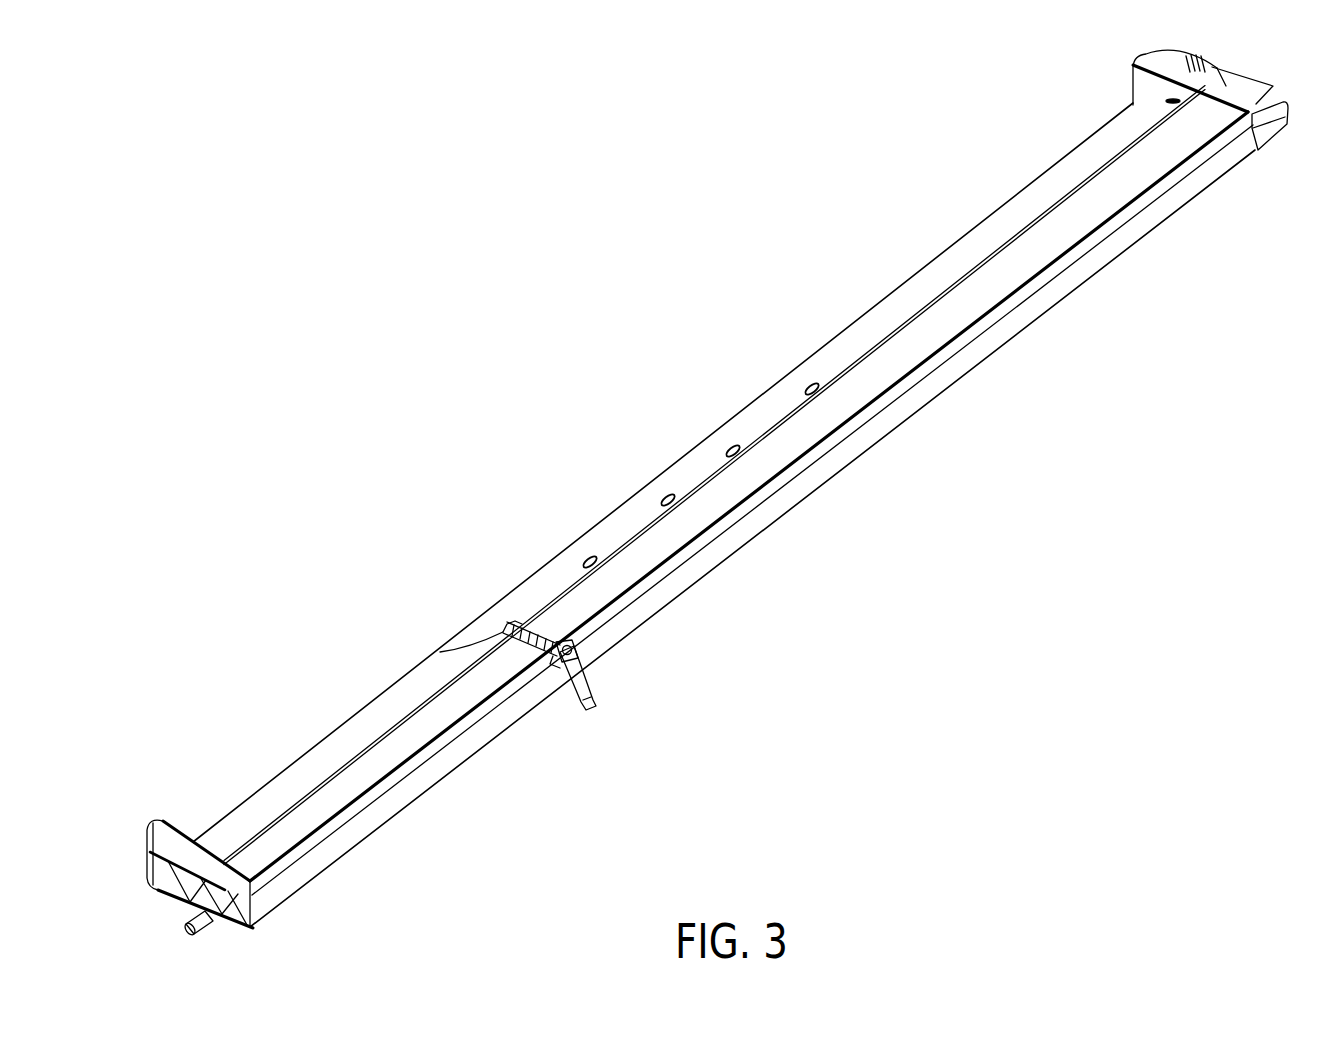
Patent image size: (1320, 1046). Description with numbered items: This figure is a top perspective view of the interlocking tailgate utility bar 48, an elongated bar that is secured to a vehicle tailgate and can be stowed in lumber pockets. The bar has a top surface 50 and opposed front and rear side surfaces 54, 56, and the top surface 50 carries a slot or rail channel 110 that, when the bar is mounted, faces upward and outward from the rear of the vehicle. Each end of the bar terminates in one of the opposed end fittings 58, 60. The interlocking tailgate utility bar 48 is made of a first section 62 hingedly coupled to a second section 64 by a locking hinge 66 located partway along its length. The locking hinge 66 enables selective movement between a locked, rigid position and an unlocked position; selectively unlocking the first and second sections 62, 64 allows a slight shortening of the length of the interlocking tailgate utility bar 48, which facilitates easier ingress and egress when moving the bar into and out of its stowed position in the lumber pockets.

The interlocking tailgate utility bar 48 is at (706, 152).
The top surface 50 is at (1037, 222).
The front side surface 54 is at (778, 385).
The rear side surface 56 is at (773, 517).
The end fitting 58 is at (160, 880).
The end fitting 60 is at (1243, 72).
The first section 62 is at (345, 678).
The second section 64 is at (925, 229).
The locking hinge 66 is at (623, 692).
The rail channel 110 is at (952, 352).